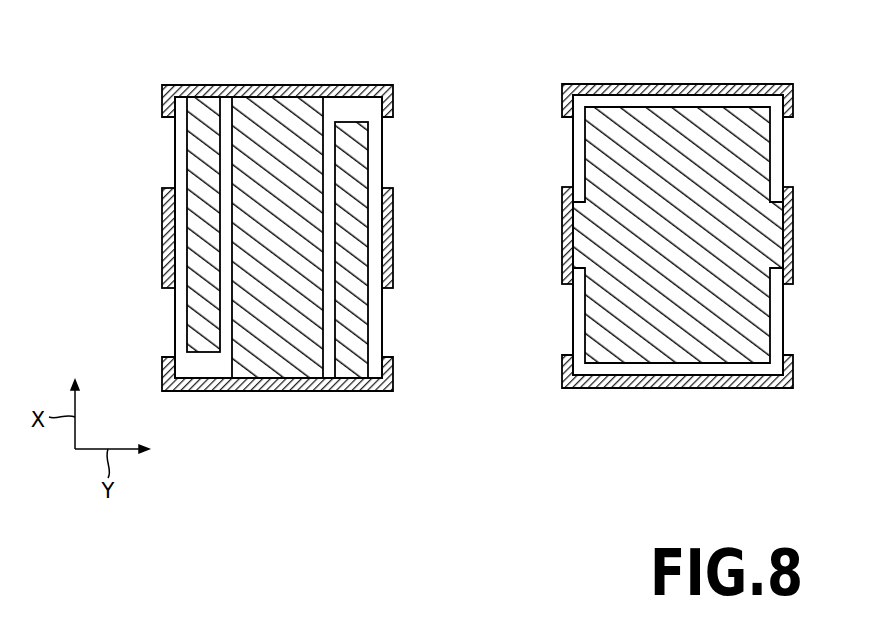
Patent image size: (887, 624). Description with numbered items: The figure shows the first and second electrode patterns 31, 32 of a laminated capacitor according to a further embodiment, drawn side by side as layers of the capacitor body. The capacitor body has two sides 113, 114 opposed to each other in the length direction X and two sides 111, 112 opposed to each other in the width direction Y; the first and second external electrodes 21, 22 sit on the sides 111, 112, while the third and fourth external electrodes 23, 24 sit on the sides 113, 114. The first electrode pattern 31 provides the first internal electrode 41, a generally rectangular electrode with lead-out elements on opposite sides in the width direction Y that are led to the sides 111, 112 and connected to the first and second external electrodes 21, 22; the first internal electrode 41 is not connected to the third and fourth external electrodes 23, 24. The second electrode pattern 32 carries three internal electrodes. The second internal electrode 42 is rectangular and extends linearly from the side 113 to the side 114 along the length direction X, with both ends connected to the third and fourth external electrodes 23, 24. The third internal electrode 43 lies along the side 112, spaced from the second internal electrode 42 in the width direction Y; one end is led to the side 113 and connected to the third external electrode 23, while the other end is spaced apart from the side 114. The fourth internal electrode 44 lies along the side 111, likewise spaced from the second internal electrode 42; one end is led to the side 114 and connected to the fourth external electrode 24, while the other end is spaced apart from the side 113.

The first external electrode 21 is at (164, 233).
The second external electrode 22 is at (393, 231).
The third external electrode 23 is at (280, 391).
The fourth external electrode 24 is at (258, 87).
The first electrode pattern 31 is at (488, 122).
The second electrode pattern 32 is at (82, 123).
The first internal electrode 41 is at (750, 306).
The second internal electrode 42 is at (293, 352).
The third internal electrode 43 is at (350, 306).
The fourth internal electrode 44 is at (203, 164).
The side of the capacitor body 111 is at (175, 315).
The side of the capacitor body 112 is at (383, 170).
The side of the capacitor body 113 is at (208, 391).
The side of the capacitor body 114 is at (348, 86).